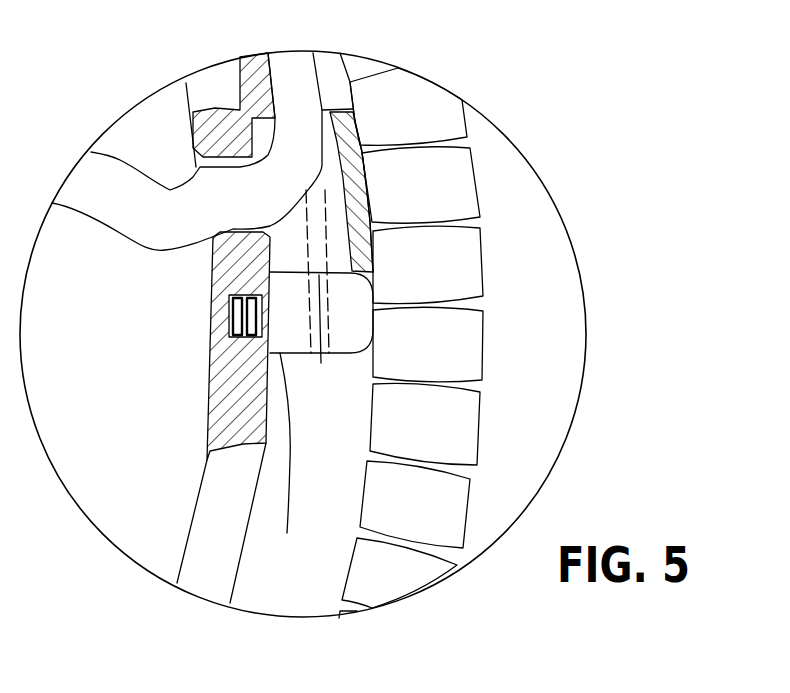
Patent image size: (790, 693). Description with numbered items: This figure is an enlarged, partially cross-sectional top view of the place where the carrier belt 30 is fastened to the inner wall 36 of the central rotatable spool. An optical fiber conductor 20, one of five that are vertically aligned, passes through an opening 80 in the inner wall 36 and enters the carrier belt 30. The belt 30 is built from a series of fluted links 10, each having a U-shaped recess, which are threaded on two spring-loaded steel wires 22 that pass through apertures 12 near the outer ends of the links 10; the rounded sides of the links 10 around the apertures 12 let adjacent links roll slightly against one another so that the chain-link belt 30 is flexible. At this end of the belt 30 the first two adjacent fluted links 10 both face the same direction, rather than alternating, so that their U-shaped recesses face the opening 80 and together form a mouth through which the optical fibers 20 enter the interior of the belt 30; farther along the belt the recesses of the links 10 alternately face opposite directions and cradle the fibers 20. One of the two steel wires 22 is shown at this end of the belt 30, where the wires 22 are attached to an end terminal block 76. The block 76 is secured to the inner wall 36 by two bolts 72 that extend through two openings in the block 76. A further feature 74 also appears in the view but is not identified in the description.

The fluted link 10 is at (350, 133).
The aperture 12 is at (312, 333).
The optical fiber conductor 20 is at (103, 230).
The steel wire 22 is at (323, 307).
The carrier belt 30 is at (520, 197).
The inner wall 36 is at (197, 503).
The bolt 72 is at (212, 328).
The retaining pin 74 is at (321, 363).
The end terminal block 76 is at (287, 533).
The opening 80 is at (193, 168).